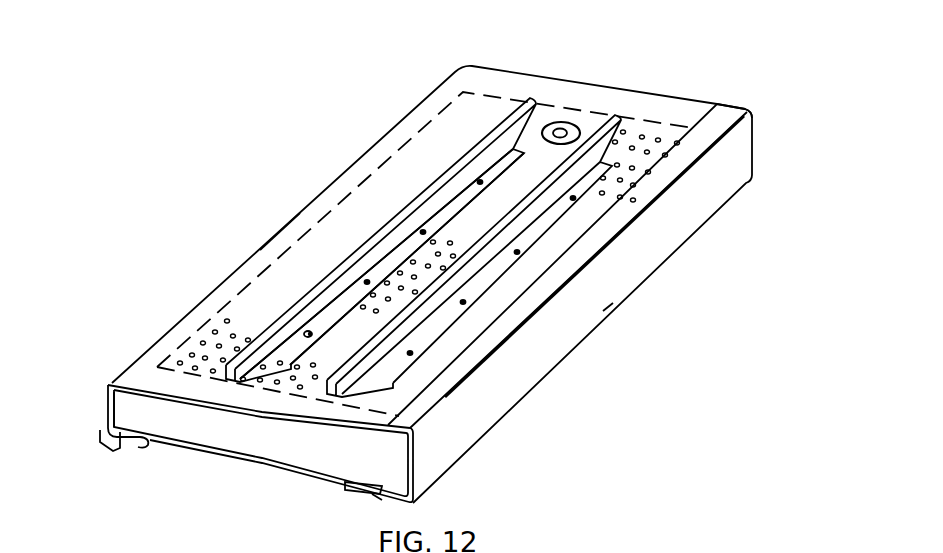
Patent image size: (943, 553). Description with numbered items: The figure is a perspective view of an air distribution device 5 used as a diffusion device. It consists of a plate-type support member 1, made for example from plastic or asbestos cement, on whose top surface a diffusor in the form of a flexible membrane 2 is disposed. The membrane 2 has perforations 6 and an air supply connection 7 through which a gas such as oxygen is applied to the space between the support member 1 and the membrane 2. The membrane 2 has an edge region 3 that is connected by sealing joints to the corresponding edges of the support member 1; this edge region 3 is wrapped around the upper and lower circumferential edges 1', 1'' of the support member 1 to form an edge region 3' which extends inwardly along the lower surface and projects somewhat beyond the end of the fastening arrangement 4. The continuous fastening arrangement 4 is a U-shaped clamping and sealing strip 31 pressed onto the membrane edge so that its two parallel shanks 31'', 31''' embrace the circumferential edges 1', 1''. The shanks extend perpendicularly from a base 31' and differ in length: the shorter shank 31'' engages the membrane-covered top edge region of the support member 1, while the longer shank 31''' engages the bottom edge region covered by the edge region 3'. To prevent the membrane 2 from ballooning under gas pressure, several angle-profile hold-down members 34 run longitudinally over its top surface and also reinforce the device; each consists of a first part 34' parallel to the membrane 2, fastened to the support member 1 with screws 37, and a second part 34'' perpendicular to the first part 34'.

The plate-type support member 1 is at (260, 443).
The upper circumferential edge 1' is at (136, 409).
The lower circumferential edge 1'' is at (147, 427).
The flexible membrane 2 is at (385, 187).
The edge region 3 is at (396, 226).
The edge region 3' is at (222, 452).
The fastening arrangement 4 is at (742, 98).
The air distribution device 5 is at (282, 224).
The perforations 6 is at (658, 137).
The air supply connection 7 is at (558, 128).
The U-shaped clamping and sealing strip 31 is at (590, 303).
The base 31' is at (641, 331).
The shorter shank 31'' is at (594, 274).
The longer shank 31''' is at (331, 512).
The hold-down member 34 is at (423, 247).
The first part 34' is at (433, 201).
The second part 34'' is at (376, 224).
The screws 37 is at (312, 334).